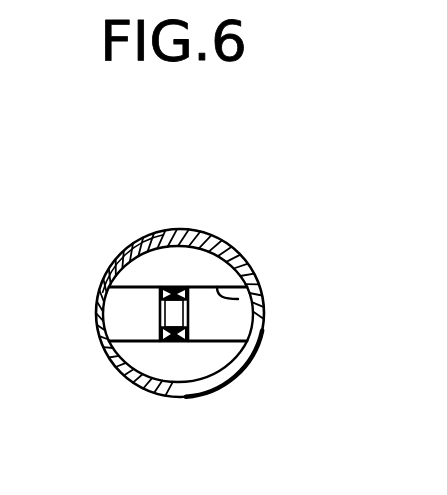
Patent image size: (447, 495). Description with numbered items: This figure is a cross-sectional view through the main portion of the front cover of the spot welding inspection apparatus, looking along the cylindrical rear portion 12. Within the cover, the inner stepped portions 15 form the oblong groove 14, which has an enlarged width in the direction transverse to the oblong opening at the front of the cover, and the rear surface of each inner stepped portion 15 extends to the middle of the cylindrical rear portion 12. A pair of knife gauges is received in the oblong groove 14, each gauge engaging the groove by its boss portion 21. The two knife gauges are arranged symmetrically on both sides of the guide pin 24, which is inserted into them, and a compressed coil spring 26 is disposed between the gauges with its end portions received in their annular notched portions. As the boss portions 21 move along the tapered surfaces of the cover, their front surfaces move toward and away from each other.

The cylindrical rear portion 12 is at (234, 382).
The oblong groove 14 is at (250, 295).
The inner stepped portion 15 is at (192, 265).
The boss portion 21 is at (106, 316).
The guide pin 24 is at (158, 322).
The coil spring 26 is at (170, 288).